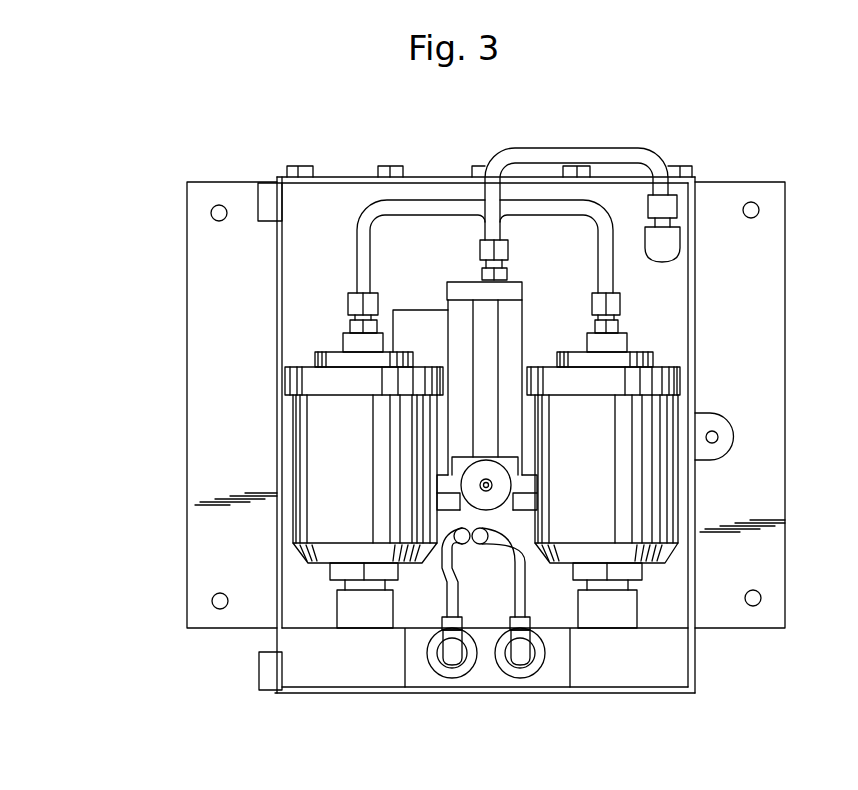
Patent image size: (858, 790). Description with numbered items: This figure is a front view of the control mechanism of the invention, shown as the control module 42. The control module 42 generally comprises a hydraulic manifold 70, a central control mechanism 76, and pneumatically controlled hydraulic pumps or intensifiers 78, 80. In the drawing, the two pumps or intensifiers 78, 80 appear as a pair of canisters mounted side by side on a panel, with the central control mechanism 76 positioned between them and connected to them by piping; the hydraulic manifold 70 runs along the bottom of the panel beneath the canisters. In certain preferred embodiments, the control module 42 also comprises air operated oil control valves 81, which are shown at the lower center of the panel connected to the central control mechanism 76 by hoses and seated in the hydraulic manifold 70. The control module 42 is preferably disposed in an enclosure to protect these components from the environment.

The control module 42 is at (640, 98).
The hydraulic manifold 70 is at (663, 660).
The central control mechanism 76 is at (480, 485).
The pneumatically controlled hydraulic pump or intensifier 78 is at (334, 463).
The pneumatically controlled hydraulic pump or intensifier 80 is at (585, 438).
The air operated oil control valves 81 is at (452, 670).